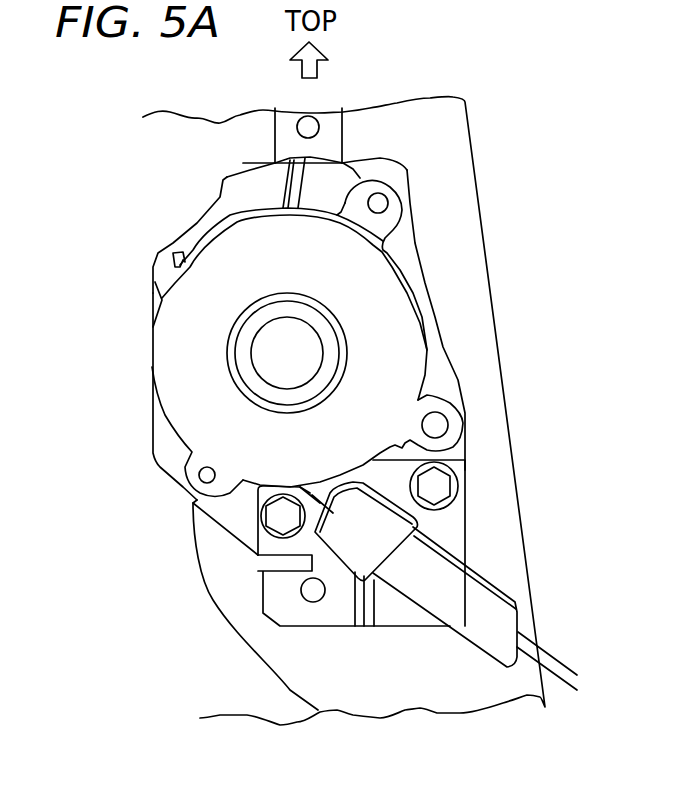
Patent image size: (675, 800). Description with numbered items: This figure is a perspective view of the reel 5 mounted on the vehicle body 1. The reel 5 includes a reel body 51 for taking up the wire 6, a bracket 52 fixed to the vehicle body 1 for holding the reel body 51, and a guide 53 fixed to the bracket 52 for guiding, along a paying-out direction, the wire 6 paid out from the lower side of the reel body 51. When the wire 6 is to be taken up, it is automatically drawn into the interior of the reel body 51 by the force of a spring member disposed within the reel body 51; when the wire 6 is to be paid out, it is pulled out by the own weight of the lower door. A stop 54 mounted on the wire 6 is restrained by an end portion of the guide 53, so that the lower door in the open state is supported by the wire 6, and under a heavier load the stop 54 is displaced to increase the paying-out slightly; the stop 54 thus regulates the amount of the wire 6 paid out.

The vehicle body 1 is at (448, 127).
The reel 5 is at (442, 254).
The wire 6 is at (562, 658).
The reel body 51 is at (178, 365).
The bracket 52 is at (248, 188).
The guide 53 is at (480, 633).
The stop 54 is at (343, 512).